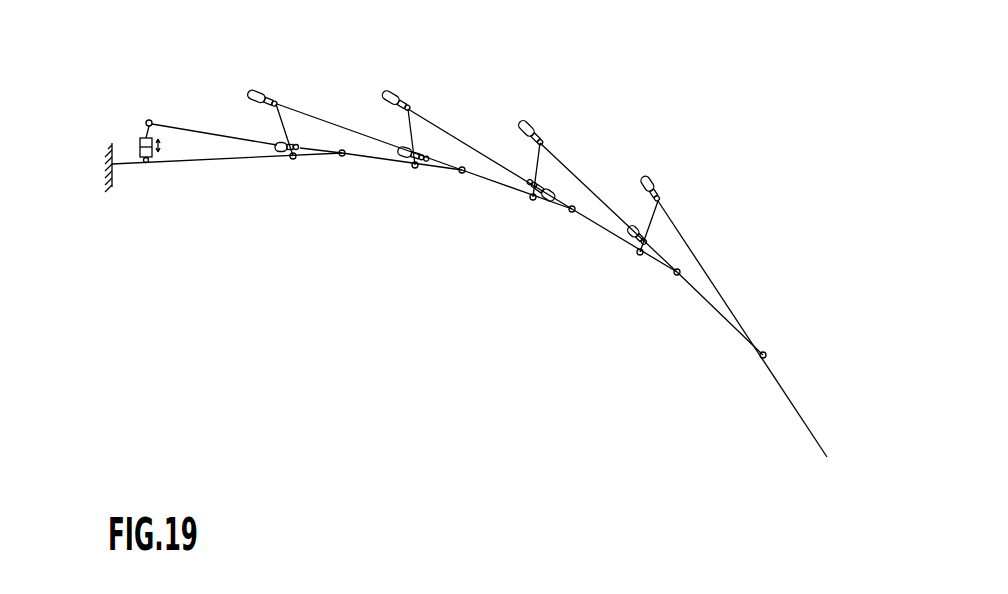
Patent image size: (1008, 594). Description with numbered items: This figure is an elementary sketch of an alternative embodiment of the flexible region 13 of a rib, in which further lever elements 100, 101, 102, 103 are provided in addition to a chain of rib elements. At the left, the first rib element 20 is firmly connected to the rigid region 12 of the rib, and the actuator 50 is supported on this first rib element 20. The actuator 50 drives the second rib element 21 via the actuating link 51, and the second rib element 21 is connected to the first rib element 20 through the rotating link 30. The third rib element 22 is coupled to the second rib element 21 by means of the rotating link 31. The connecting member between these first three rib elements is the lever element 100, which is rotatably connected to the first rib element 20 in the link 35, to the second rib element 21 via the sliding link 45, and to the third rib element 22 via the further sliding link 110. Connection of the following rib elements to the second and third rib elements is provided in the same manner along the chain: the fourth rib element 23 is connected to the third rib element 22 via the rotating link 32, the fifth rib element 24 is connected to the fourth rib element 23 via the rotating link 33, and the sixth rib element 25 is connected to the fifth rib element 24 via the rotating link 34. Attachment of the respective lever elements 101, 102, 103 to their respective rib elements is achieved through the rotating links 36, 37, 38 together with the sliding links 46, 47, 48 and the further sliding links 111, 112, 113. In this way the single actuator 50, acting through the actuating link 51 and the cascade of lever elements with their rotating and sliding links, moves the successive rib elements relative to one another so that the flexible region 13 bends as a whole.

The rigid region 12 is at (103, 154).
The flexible region 13 is at (847, 200).
The first rib element 20 is at (175, 161).
The second rib element 21 is at (185, 129).
The third rib element 22 is at (337, 124).
The fourth rib element 23 is at (448, 133).
The fifth rib element 24 is at (567, 168).
The sixth rib element 25 is at (685, 237).
The rotating link 30 is at (341, 156).
The rotating link 31 is at (462, 173).
The rotating link 32 is at (572, 212).
The rotating link 33 is at (677, 275).
The rotating link 34 is at (766, 352).
The link 35 is at (293, 159).
The rotating link 36 is at (415, 168).
The rotating link 37 is at (531, 200).
The rotating link 38 is at (640, 255).
The sliding link 45 is at (298, 143).
The sliding link 46 is at (422, 162).
The sliding link 47 is at (548, 205).
The sliding link 48 is at (648, 238).
The actuator 50 is at (141, 137).
The actuating link 51 is at (149, 120).
The lever element 100 is at (284, 125).
The lever element 101 is at (410, 130).
The lever element 102 is at (537, 160).
The lever element 103 is at (650, 216).
The sliding link 110 is at (260, 94).
The sliding link 111 is at (398, 93).
The sliding link 112 is at (535, 122).
The sliding link 113 is at (653, 178).